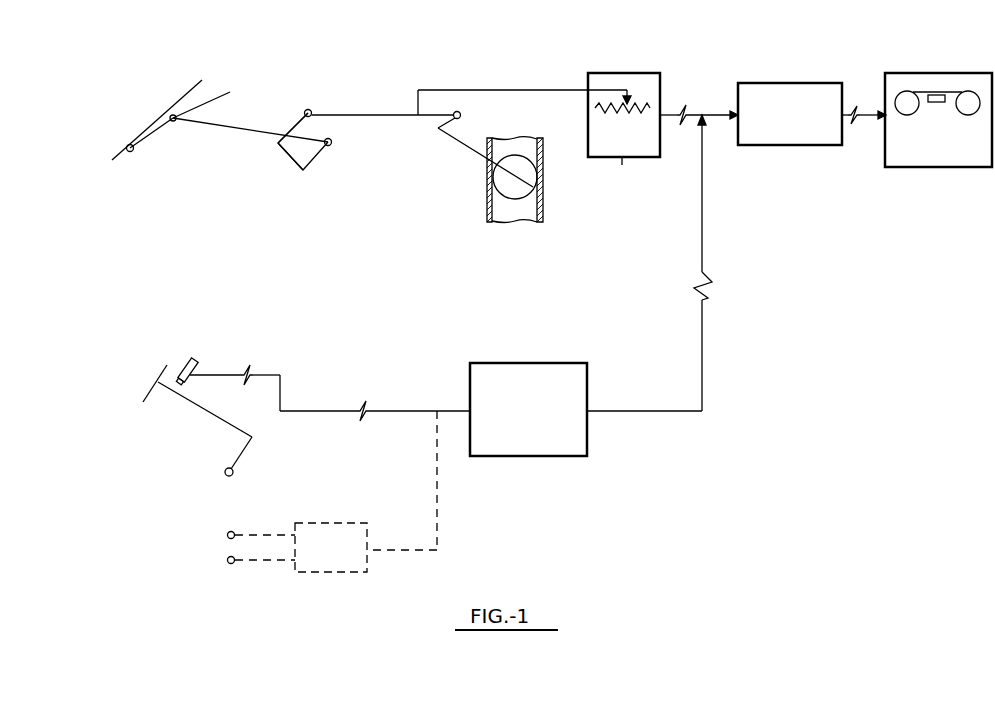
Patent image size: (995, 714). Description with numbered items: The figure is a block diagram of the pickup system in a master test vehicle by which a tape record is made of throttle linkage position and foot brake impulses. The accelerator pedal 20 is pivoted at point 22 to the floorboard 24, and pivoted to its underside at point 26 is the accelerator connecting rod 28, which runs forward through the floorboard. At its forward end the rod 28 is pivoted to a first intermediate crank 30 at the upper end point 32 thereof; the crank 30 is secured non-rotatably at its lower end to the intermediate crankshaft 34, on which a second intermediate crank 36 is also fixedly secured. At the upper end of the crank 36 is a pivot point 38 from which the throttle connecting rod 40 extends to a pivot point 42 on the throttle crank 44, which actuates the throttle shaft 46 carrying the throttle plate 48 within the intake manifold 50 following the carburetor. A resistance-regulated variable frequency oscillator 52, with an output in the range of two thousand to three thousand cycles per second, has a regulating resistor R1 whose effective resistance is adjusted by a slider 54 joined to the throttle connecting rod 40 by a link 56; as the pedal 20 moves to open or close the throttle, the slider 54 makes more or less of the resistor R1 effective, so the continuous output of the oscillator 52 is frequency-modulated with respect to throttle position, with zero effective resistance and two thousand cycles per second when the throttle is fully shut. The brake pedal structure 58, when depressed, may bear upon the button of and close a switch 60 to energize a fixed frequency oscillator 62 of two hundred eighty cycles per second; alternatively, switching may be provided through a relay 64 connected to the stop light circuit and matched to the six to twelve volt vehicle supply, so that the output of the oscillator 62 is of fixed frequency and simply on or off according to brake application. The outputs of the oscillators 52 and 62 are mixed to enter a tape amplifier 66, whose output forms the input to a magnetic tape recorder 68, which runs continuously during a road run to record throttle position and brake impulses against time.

The accelerator pedal 20 is at (187, 93).
The pivot point 22 is at (127, 145).
The floorboard 24 is at (149, 140).
The pivot point 26 is at (170, 123).
The accelerator connecting rod 28 is at (265, 129).
The first intermediate crank 30 is at (321, 155).
The upper end point 32 is at (332, 141).
The intermediate crankshaft 34 is at (288, 158).
The second intermediate crank 36 is at (295, 123).
The pivot point 38 is at (312, 108).
The throttle connecting rod 40 is at (367, 112).
The pivot point 42 is at (463, 115).
The throttle crank 44 is at (440, 128).
The throttle shaft 46 is at (457, 147).
The throttle plate 48 is at (502, 177).
The intake manifold 50 is at (488, 204).
The variable frequency oscillator 52 is at (588, 117).
The slider 54 is at (633, 94).
The link 56 is at (532, 88).
The regulating resistor R1 is at (645, 103).
The brake pedal structure 58 is at (202, 410).
The switch 60 is at (198, 354).
The fixed frequency oscillator 62 is at (545, 363).
The relay 64 is at (322, 523).
The tape amplifier 66 is at (785, 82).
The magnetic tape recorder 68 is at (927, 73).